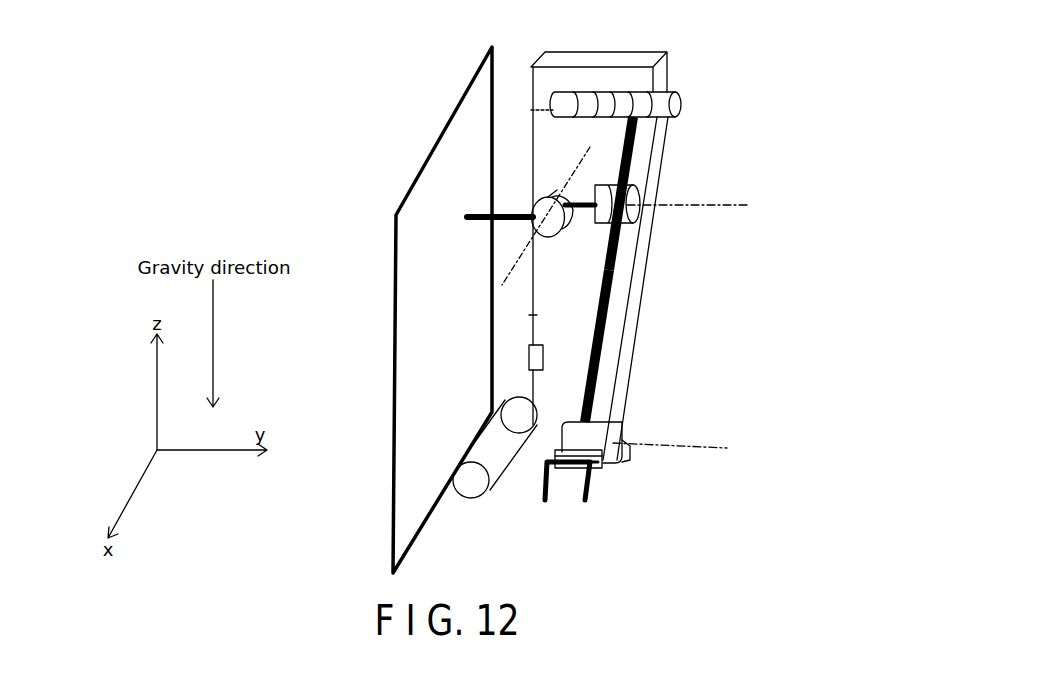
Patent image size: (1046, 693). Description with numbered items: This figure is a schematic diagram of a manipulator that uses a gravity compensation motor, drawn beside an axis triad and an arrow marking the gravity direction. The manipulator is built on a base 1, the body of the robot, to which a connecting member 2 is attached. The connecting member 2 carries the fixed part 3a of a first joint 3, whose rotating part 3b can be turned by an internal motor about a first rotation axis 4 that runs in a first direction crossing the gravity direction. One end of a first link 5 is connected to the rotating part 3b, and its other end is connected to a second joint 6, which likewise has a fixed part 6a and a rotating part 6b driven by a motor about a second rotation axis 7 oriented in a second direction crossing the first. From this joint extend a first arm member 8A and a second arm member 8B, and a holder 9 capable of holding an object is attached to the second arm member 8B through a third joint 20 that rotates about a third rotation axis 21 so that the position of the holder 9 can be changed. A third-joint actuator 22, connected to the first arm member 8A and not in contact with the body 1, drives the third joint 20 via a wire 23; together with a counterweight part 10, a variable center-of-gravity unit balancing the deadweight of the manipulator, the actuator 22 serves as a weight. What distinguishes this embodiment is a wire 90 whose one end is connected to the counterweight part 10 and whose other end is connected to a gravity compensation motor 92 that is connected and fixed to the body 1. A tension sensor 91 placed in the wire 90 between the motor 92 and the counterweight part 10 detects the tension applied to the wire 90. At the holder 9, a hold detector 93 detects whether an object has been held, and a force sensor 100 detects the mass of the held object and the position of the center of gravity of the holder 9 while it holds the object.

The base 1 is at (410, 204).
The connecting member 2 is at (463, 223).
The first joint 3 is at (369, 65).
The fixed part 3a is at (533, 210).
The rotating part 3b is at (542, 192).
The first rotation axis 4 is at (527, 268).
The first link 5 is at (583, 211).
The second joint 6 is at (740, 155).
The fixed part 6a is at (633, 186).
The rotating part 6b is at (640, 200).
The second rotation axis 7 is at (742, 207).
The first arm member 8A is at (635, 162).
The second arm member 8B is at (617, 262).
The holder 9 is at (593, 498).
The counterweight part 10 is at (665, 75).
The third joint 20 is at (580, 438).
The third rotation axis 21 is at (727, 448).
The third-joint actuator 22 is at (675, 108).
The wire 23 is at (650, 248).
The wire 90 is at (527, 315).
The tension sensor 91 is at (527, 357).
The gravity compensation motor 92 is at (470, 427).
The hold detector 93 is at (603, 445).
The force sensor 100 is at (620, 462).